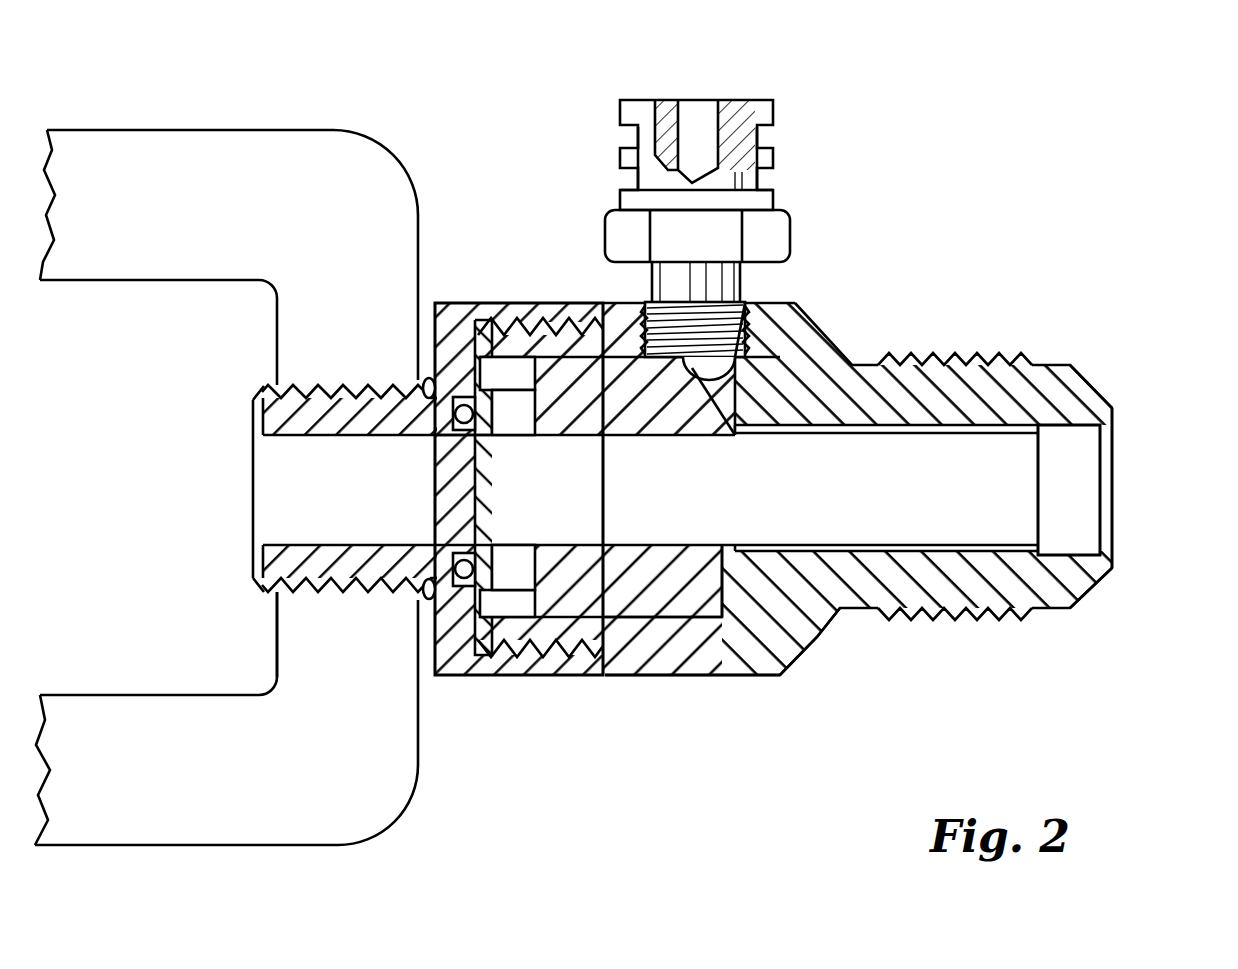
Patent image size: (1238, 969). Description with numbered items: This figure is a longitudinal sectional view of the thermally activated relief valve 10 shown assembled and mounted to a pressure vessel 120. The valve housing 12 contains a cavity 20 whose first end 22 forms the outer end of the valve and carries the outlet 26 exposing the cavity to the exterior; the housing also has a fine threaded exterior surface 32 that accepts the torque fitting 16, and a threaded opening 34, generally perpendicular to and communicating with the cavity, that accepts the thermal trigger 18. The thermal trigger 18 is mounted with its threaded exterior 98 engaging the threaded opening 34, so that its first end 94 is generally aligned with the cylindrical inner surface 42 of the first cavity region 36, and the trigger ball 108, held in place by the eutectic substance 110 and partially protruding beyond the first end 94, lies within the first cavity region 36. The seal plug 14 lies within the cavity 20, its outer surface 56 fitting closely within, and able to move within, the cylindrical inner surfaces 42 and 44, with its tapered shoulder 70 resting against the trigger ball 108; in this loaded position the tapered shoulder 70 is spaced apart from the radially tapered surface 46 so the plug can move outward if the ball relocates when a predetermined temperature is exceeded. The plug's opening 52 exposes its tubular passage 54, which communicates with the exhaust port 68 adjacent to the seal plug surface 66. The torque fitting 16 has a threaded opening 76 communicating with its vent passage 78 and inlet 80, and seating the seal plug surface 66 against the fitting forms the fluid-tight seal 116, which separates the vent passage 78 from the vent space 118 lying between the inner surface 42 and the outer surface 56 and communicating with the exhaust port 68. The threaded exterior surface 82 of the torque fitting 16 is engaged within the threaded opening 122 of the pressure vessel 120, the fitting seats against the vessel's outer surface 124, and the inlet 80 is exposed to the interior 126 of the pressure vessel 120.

The thermally activated relief valve 10 is at (635, 690).
The valve housing 12 is at (981, 632).
The seal plug 14 is at (580, 388).
The torque fitting 16 is at (475, 692).
The thermal trigger 18 is at (735, 202).
The cavity 20 is at (800, 583).
The first end 22 is at (1115, 545).
The outlet 26 is at (1115, 485).
The fine threaded exterior surface 32 is at (528, 677).
The threaded opening 34 is at (745, 335).
The first cavity region 36 is at (823, 367).
The cylindrical inner surface 42 is at (430, 378).
The cylindrical inner surface 44 is at (1114, 430).
The radially tapered surface 46 is at (743, 562).
The opening 52 is at (1043, 490).
The tubular passage 54 is at (1042, 592).
The outer surface 56 is at (763, 437).
The seal plug surface 66 is at (475, 452).
The exhaust port 68 is at (507, 563).
The tapered shoulder 70 is at (853, 357).
The threaded opening 76 is at (592, 677).
The vent passage 78 is at (303, 515).
The inlet 80 is at (252, 478).
The threaded exterior surface 82 is at (253, 557).
The first end 94 is at (783, 357).
The threaded exterior 98 is at (742, 240).
The trigger ball 108 is at (710, 373).
The eutectic substance 110 is at (690, 110).
The seal 116 is at (480, 490).
The vent space 118 is at (522, 358).
The pressure vessel 120 is at (338, 130).
The threaded opening 122 is at (300, 560).
The outer surface 124 is at (420, 232).
The interior 126 is at (175, 663).